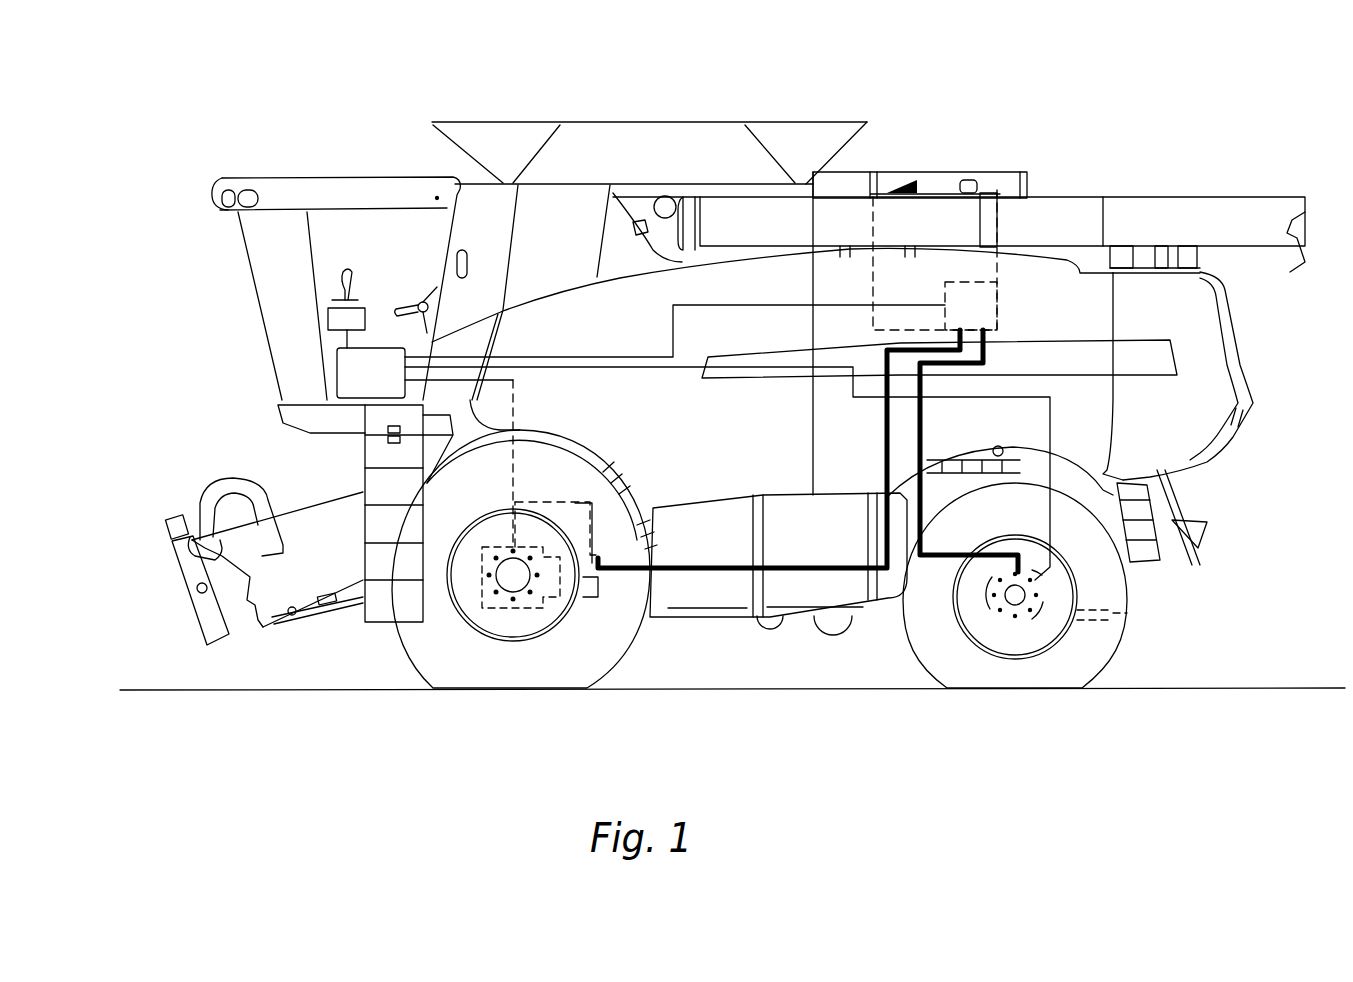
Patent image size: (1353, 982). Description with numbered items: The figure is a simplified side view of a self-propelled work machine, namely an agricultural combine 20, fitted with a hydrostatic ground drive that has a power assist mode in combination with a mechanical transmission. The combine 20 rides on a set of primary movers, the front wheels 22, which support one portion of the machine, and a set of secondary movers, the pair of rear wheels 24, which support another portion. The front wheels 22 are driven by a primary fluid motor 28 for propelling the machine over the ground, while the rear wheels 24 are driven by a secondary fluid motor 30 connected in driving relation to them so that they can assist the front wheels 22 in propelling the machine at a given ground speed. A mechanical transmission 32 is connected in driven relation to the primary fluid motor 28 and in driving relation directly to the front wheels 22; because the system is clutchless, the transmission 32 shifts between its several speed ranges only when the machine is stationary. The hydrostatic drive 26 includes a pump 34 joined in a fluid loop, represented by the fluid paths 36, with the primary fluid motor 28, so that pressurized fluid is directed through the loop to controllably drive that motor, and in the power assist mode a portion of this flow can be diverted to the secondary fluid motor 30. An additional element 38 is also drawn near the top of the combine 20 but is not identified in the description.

The agricultural combine 20 is at (977, 106).
The front wheels 22 is at (396, 657).
The rear wheels 24 is at (1124, 655).
The hydrostatic drive 26 is at (518, 614).
The primary fluid motor 28 is at (600, 597).
The secondary fluid motor 30 is at (1003, 612).
The mechanical transmission 32 is at (514, 546).
The pump 34 is at (997, 305).
The fluid paths 36 is at (887, 445).
The unloading auger 38 is at (957, 225).